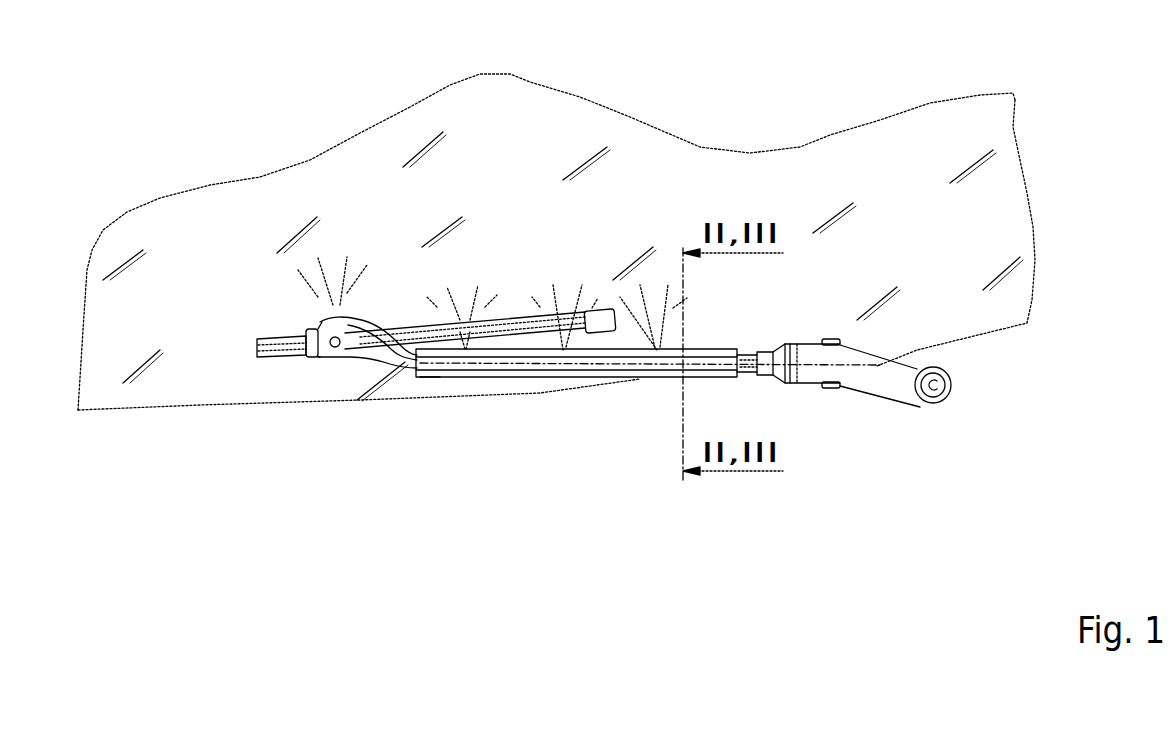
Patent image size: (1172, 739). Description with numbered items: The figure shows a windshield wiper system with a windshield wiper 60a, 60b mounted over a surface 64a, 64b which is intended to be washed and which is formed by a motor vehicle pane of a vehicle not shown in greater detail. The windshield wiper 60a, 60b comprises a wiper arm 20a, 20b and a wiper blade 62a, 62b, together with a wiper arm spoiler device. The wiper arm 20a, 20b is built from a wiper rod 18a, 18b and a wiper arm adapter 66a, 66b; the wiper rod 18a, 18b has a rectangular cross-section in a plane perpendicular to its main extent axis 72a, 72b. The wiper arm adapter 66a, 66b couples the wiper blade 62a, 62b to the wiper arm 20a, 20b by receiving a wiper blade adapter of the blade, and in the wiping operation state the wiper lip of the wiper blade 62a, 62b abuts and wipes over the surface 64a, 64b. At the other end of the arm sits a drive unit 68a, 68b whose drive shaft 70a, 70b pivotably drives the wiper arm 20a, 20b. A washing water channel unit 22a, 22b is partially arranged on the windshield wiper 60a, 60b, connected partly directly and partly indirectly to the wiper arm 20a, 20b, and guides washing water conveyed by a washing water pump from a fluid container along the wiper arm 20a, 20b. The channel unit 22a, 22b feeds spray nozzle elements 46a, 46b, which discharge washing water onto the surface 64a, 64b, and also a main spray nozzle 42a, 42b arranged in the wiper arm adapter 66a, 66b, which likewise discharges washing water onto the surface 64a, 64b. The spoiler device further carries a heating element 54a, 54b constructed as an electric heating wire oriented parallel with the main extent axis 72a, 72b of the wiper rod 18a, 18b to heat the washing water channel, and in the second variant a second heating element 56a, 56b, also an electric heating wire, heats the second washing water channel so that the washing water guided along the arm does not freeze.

The wiper rod 18a is at (811, 397).
The wiper rod 18b is at (744, 373).
The wiper arm 20a is at (376, 428).
The wiper arm 20b is at (392, 367).
The washing water channel unit 22a is at (375, 203).
The washing water channel unit 22b is at (378, 338).
The main spray nozzle 42a is at (254, 408).
The main spray nozzle 42b is at (323, 358).
The spray nozzle elements 46a is at (492, 355).
The spray nozzle elements 46b is at (655, 352).
The heating element 54a is at (458, 424).
The first heating element 54b is at (430, 379).
The vehicle window 56a is at (550, 242).
The second heating element 56b is at (635, 243).
The windshield wiper 60a is at (648, 323).
The windshield wiper 60b is at (723, 330).
The wiper blade 62a is at (480, 184).
The wiper blade 62b is at (519, 320).
The surface intended to be washed 64a is at (1017, 233).
The surface intended to be washed 64b is at (957, 213).
The wiper arm adapter 66a is at (316, 404).
The wiper arm adapter 66b is at (352, 345).
The drive unit 68a is at (970, 459).
The drive unit 68b is at (938, 421).
The drive shaft 70a is at (1003, 385).
The drive shaft 70b is at (951, 386).
The main extent axis 72a is at (956, 373).
The main extent axis 72b is at (880, 366).